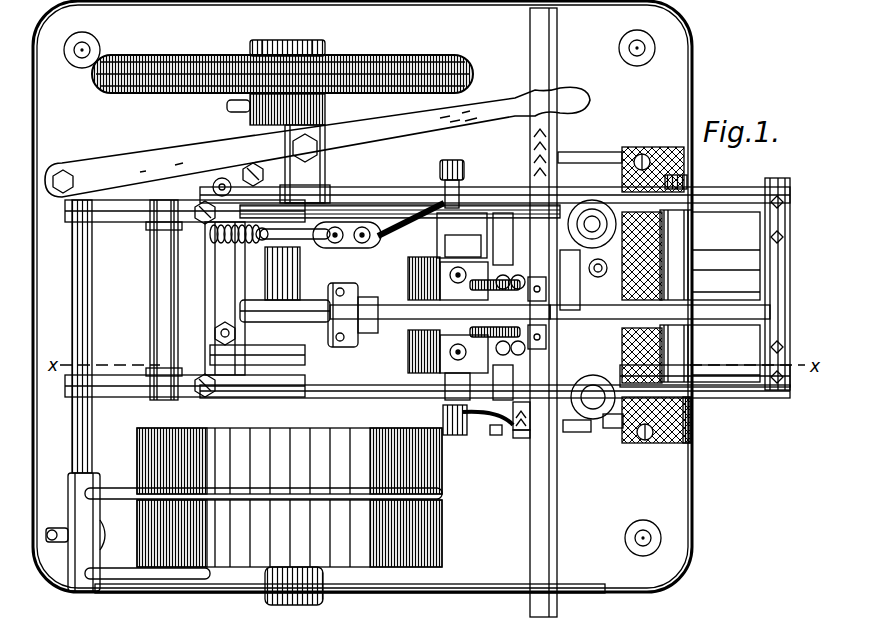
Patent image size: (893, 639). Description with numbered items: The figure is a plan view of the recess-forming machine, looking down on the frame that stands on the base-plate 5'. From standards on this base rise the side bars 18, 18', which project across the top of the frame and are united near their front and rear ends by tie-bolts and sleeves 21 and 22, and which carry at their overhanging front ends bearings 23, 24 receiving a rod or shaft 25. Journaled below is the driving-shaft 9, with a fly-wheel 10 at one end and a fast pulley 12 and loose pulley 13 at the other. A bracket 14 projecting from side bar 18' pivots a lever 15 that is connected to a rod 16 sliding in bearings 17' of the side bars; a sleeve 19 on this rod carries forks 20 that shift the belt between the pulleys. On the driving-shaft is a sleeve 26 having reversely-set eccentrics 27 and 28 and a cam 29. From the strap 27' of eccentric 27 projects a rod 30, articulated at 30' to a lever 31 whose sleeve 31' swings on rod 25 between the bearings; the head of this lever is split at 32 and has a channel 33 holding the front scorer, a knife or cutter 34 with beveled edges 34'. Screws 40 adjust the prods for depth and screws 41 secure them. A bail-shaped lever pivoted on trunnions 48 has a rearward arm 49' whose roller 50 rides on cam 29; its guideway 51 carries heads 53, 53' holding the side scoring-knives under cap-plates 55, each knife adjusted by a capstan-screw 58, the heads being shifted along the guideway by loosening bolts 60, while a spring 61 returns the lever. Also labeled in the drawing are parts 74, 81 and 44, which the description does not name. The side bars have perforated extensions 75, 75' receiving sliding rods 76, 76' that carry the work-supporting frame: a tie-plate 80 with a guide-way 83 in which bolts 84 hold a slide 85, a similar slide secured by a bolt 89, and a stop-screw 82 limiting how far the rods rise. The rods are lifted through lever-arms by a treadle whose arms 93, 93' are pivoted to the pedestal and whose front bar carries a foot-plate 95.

The driving-shaft 9 is at (283, 40).
The fly-wheel 10 is at (370, 60).
The lever 15 is at (478, 112).
The treadle arm 93' is at (611, 126).
The sliding rod 76' is at (653, 155).
The laterally-projecting perforated extension 75' is at (699, 172).
The rod or shaft 25 is at (760, 198).
The bearing 23 is at (782, 200).
The bracket 14 is at (305, 164).
The anti-friction-roller 50 is at (305, 191).
The rearwardly-extending arm 49' is at (414, 185).
The trunnion 48 is at (465, 165).
The side bar 18' is at (495, 191).
The bearing 17' is at (172, 222).
The rod 16 is at (92, 275).
The tie-bolt and sleeve 22 is at (150, 306).
The spring 61 is at (215, 246).
The cam 29 is at (262, 240).
The sleeve 26 is at (265, 270).
The eccentric 28 is at (250, 300).
The eccentric 27 is at (209, 322).
The strap 27' is at (257, 354).
The block 74 is at (330, 290).
The bolt 60 is at (440, 270).
The head 53' is at (410, 278).
The transverse tongue or guideway 51 is at (462, 235).
The cap-plate 55 is at (503, 265).
The knife or cutter 34 is at (592, 224).
The channel 33 is at (581, 276).
The split 32 is at (545, 283).
The tie-bolt and sleeve 21 is at (680, 270).
The rod 81 is at (680, 248).
The guide-way 83 is at (700, 262).
The stop-screw 82 is at (680, 285).
The slide 85 is at (675, 295).
The sleeve 31' is at (801, 284).
The screw 41 is at (440, 310).
The screw 40 is at (660, 311).
The lever 31 is at (726, 350).
The bolt 84 is at (680, 340).
The tie-plate 80 is at (680, 355).
The articulation 30' is at (377, 324).
The head 53 is at (411, 351).
The rod 30 is at (211, 394).
The side bar 18 is at (495, 399).
The capstan-screw 58 is at (447, 380).
The bearing 24 is at (780, 390).
The fork 20 is at (124, 490).
The fast pulley 12 is at (270, 478).
The loose pulley 13 is at (270, 548).
The sleeve 19 is at (70, 578).
The curved rod 44 is at (490, 415).
The base-plate 5' is at (503, 459).
The treadle arm 93 is at (515, 473).
The beveled edge 34' is at (588, 419).
The sliding rod 76 is at (580, 462).
The laterally-projecting perforated extension 75 is at (614, 448).
The foot-plate 95 is at (692, 430).
The bolt 89 is at (540, 552).